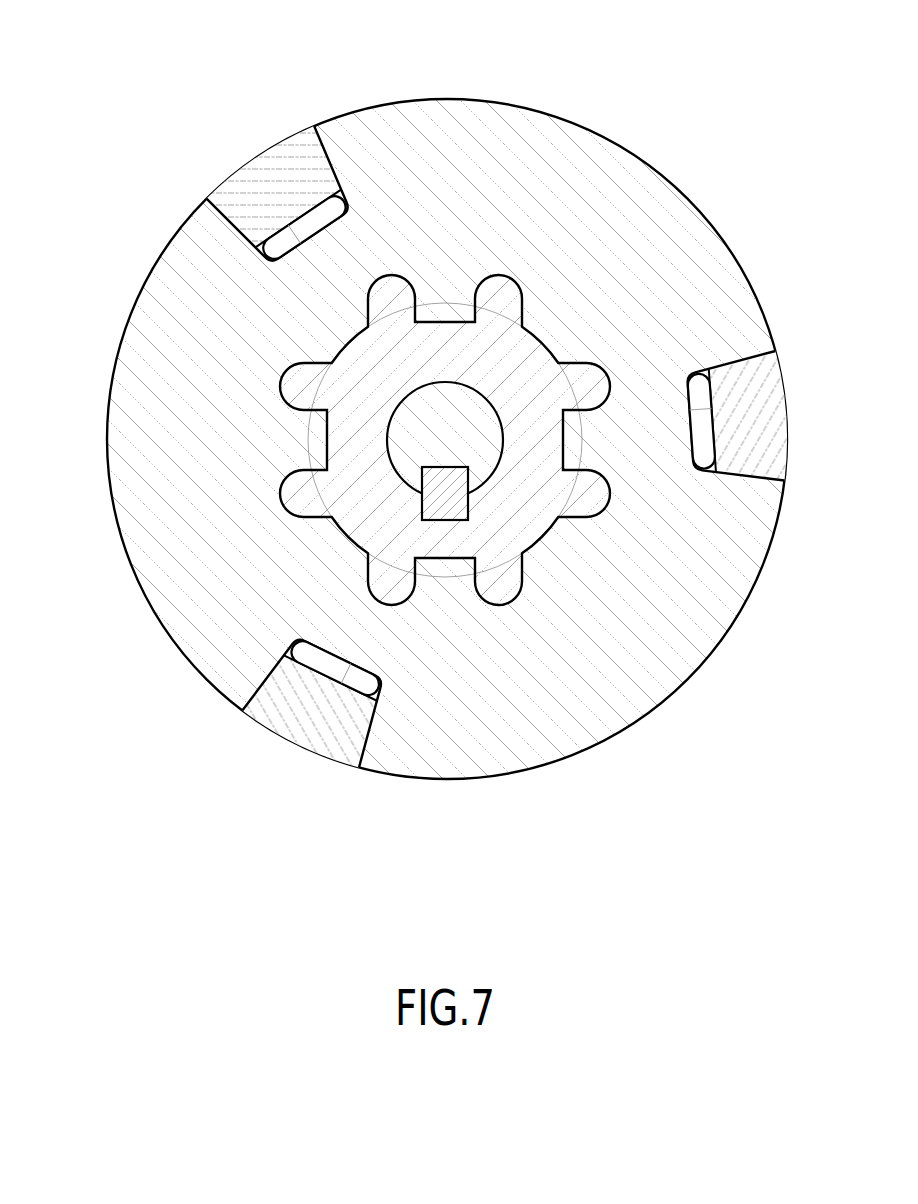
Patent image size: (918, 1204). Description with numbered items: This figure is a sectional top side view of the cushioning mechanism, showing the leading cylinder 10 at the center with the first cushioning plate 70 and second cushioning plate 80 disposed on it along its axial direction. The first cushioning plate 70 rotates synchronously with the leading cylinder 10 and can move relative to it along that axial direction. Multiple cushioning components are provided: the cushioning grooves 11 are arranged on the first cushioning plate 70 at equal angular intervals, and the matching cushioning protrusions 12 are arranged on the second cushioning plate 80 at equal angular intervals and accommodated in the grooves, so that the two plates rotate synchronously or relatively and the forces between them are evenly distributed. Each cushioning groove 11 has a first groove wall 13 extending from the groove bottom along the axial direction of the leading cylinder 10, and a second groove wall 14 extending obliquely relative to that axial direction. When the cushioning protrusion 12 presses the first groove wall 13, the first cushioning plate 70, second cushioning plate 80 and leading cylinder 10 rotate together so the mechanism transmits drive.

The leading cylinder 10 is at (521, 345).
The cushioning groove 11 is at (318, 212).
The cushioning protrusion 12 is at (287, 176).
The first groove wall 13 is at (368, 676).
The second groove wall 14 is at (308, 645).
The first cushioning plate 70 is at (134, 576).
The second cushioning plate 80 is at (413, 410).